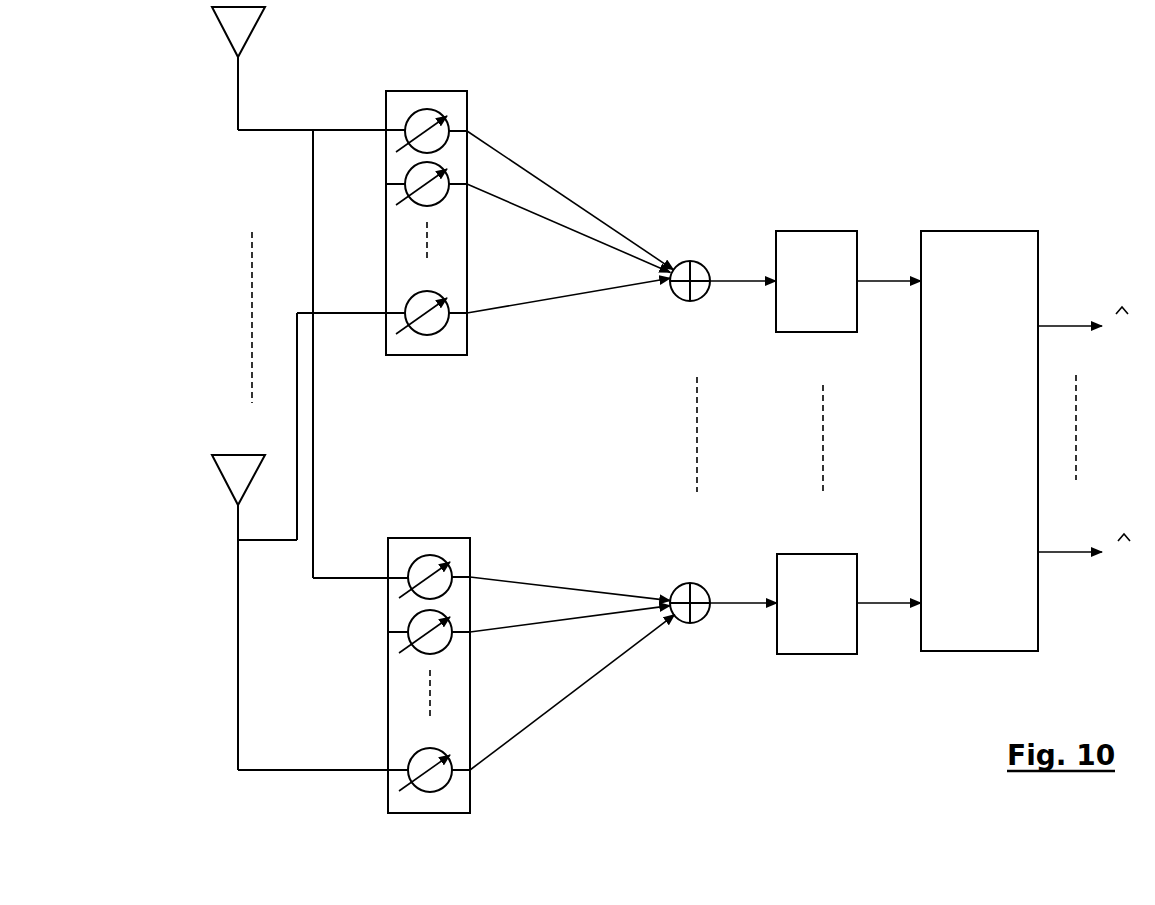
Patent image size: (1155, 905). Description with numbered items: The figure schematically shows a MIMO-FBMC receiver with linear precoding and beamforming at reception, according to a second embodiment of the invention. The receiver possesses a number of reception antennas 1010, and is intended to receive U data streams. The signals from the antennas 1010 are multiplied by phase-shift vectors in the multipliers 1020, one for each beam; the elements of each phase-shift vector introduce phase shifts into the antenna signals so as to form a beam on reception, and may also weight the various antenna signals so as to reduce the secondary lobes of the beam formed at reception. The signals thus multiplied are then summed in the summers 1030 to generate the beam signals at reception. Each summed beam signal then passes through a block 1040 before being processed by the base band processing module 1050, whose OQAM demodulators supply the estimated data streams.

The reception antenna 1010 is at (223, 478).
The phase-shift vector multiplier 1020 is at (426, 89).
The summer 1030 is at (698, 262).
The inverse RF block (RF^-1) 1040 is at (818, 229).
The base band processing module 1050 is at (974, 229).